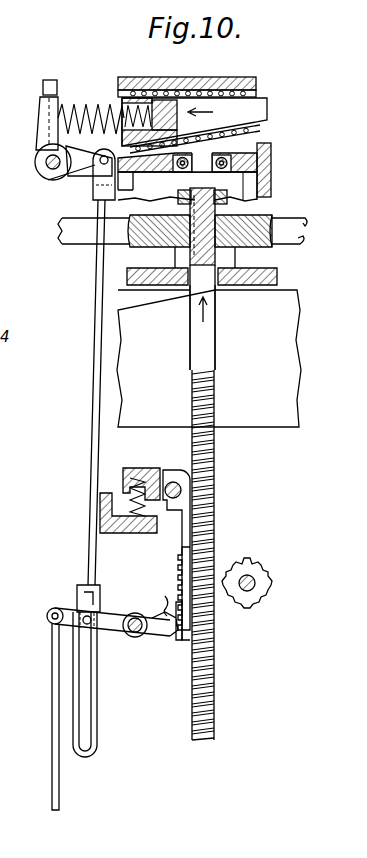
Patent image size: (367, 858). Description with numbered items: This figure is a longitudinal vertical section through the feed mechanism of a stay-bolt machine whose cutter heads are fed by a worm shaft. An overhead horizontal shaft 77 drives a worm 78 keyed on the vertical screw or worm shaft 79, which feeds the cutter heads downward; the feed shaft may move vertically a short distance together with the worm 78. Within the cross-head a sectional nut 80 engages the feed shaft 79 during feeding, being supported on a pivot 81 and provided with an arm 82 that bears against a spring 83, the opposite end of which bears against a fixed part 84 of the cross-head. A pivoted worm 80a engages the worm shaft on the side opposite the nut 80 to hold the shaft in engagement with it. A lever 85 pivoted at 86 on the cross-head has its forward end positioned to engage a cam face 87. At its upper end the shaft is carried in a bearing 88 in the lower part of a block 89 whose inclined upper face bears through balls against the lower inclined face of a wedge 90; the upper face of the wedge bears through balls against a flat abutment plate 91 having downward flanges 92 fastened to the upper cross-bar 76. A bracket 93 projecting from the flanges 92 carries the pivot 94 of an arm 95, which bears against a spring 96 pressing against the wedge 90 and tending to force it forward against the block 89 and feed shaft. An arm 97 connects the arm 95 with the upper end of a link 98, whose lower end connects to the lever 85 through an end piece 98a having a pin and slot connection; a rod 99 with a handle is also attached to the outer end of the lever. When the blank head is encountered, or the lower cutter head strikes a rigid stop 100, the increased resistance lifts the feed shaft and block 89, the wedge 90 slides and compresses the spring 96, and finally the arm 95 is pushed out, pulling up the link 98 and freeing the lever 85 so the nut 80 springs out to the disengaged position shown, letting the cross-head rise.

The upper cross-bar 76 is at (209, 356).
The overhead horizontal shaft 77 is at (286, 237).
The worm 78 is at (262, 212).
The vertical screw or worm shaft 79 is at (208, 332).
The sectional nut 80 is at (181, 568).
The pivoted worm 80a is at (270, 595).
The pivot 81 is at (176, 468).
The arm 82 is at (140, 468).
The spring 83 is at (128, 482).
The fixed part of the cross-head 84 is at (118, 533).
The lever 85 is at (166, 638).
The pivot 86 is at (133, 638).
The cam face 87 is at (165, 598).
The bearing 88 is at (222, 172).
The block 89 is at (262, 133).
The wedge 90 is at (194, 122).
The flat abutment plate 91 is at (240, 78).
The downward flanges 92 is at (120, 98).
The bracket 93 is at (92, 196).
The pivot 94 is at (45, 162).
The arm 95 is at (38, 124).
The spring 96 is at (80, 104).
The arm 97 is at (78, 178).
The link 98 is at (92, 395).
The end piece 98a is at (98, 694).
The rod 99 is at (52, 695).
The rigid stop 100 is at (178, 195).